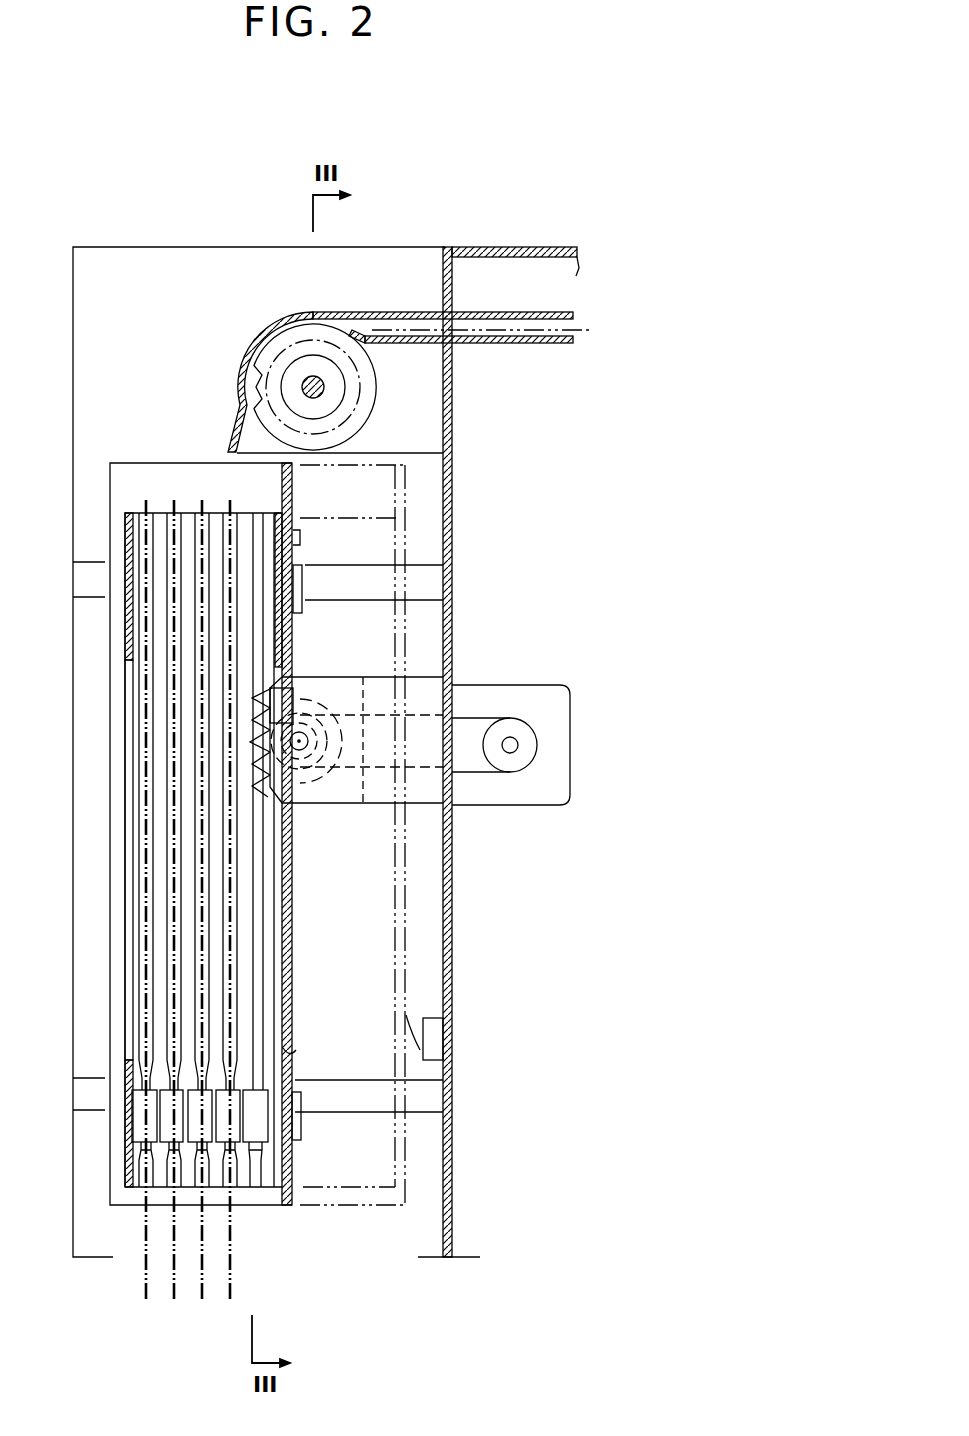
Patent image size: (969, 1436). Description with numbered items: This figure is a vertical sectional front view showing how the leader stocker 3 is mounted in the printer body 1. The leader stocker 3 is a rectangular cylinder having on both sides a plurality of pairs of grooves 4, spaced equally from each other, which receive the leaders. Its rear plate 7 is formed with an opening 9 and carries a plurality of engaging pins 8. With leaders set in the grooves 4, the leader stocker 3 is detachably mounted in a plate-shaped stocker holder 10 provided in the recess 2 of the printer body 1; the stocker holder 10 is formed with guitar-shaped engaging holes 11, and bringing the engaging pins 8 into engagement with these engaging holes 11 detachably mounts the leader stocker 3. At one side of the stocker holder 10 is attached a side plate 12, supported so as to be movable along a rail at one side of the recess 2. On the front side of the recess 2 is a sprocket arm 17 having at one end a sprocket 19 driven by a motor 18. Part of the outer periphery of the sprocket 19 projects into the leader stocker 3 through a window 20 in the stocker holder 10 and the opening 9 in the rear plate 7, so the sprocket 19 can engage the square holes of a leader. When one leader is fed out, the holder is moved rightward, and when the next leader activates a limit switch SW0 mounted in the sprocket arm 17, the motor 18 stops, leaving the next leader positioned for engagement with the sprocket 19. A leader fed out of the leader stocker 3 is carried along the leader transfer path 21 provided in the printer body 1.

The printer body 1 is at (490, 247).
The recess 2 is at (175, 268).
The leader stocker 3 is at (125, 545).
The grooves 4 is at (172, 897).
The rear plate 7 is at (302, 537).
The engaging pins 8 is at (303, 585).
The opening 9 is at (277, 967).
The stocker holder 10 is at (291, 915).
The engaging holes 11 is at (290, 1052).
The side plate 12 is at (178, 462).
The sprocket arm 17 is at (420, 690).
The motor 18 is at (540, 705).
The sprocket 19 is at (337, 777).
The window 20 is at (293, 812).
The leader transfer path 21 is at (411, 313).
The limit switch SW0 is at (297, 692).